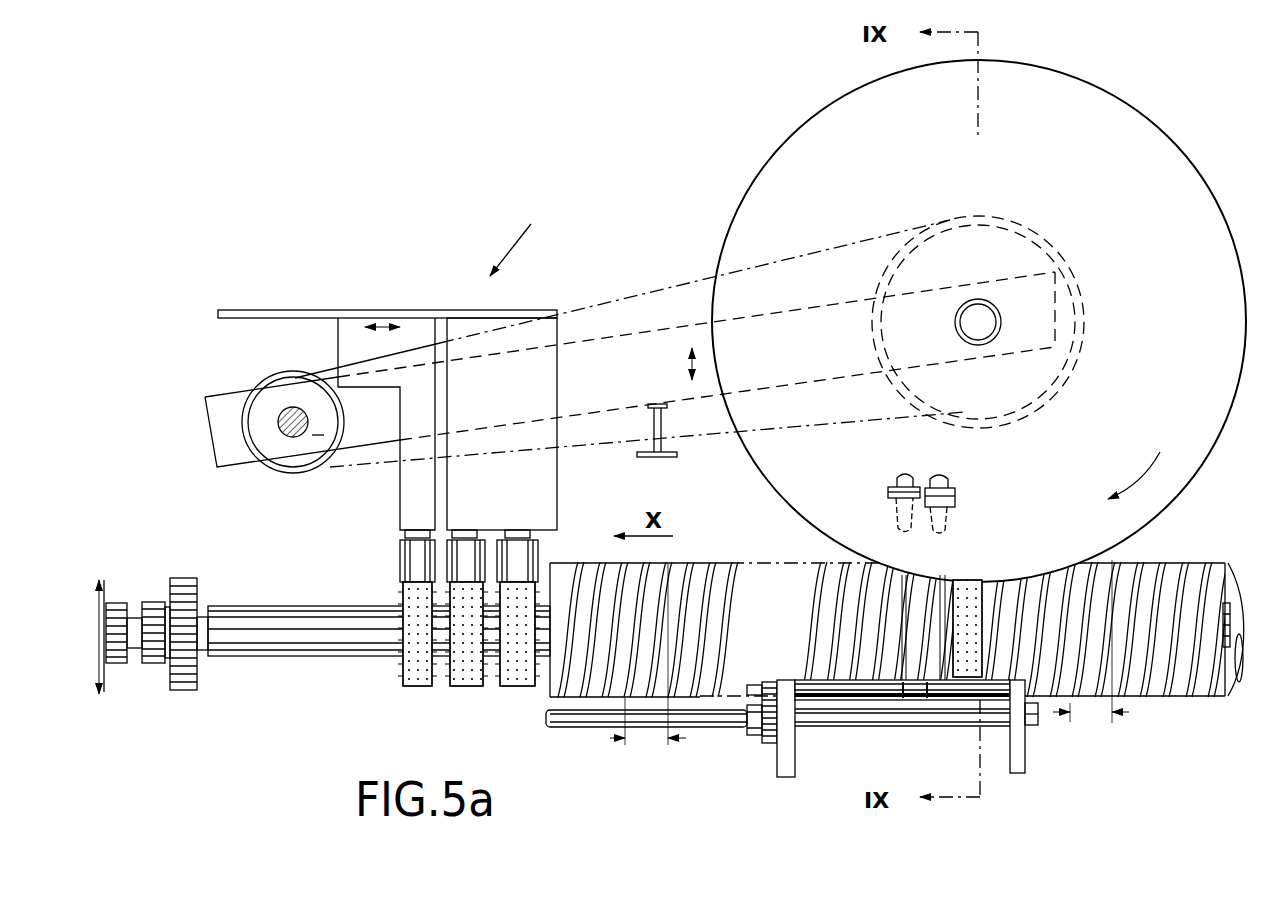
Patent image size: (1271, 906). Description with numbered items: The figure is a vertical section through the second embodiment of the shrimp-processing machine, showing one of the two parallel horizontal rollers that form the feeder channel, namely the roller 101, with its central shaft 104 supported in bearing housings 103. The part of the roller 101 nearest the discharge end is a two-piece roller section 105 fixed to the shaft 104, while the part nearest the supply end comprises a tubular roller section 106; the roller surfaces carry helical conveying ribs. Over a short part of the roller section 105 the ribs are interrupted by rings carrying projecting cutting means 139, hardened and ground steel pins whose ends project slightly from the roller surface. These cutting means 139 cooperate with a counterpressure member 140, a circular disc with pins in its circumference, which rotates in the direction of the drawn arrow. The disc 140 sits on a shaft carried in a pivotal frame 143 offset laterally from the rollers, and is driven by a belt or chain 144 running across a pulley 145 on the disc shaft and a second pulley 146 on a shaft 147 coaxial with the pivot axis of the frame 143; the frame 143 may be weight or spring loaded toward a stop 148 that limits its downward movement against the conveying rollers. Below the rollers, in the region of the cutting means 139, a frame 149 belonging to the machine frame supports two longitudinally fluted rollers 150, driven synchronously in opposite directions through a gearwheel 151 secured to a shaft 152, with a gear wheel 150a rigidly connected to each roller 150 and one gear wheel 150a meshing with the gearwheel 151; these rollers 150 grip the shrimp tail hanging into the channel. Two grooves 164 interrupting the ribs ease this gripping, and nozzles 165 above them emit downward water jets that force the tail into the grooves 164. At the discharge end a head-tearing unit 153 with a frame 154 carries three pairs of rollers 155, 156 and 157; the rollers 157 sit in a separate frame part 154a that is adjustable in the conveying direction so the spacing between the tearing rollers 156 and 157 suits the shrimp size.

The roller 101 is at (901, 654).
The bearing housing 103 is at (181, 590).
The central shaft 104 is at (292, 638).
The two-piece roller section 105 is at (1184, 576).
The tubular roller section 106 is at (1233, 695).
The cutting means 139 is at (978, 579).
The counterpressure member 140 is at (1170, 160).
The pivotal frame 143 is at (672, 340).
The belt or chain 144 is at (617, 306).
The pulley 145 is at (1063, 266).
The second pulley 146 is at (282, 381).
The shaft 147 is at (291, 440).
The stop 148 is at (665, 426).
The frame 149 is at (1022, 760).
The longitudinally fluted roller 150 is at (893, 728).
The gear wheel 150a is at (768, 682).
The gearwheel 151 is at (768, 742).
The shaft 152 is at (609, 725).
The head tearing unit 153 is at (529, 237).
The frame 154 is at (272, 318).
The separate frame part 154a is at (412, 332).
The pair of rollers 155 is at (518, 681).
The pair of rollers 156 is at (468, 681).
The pair of rollers 157 is at (418, 681).
The groove 164 is at (927, 699).
The nozzle 165 is at (886, 512).